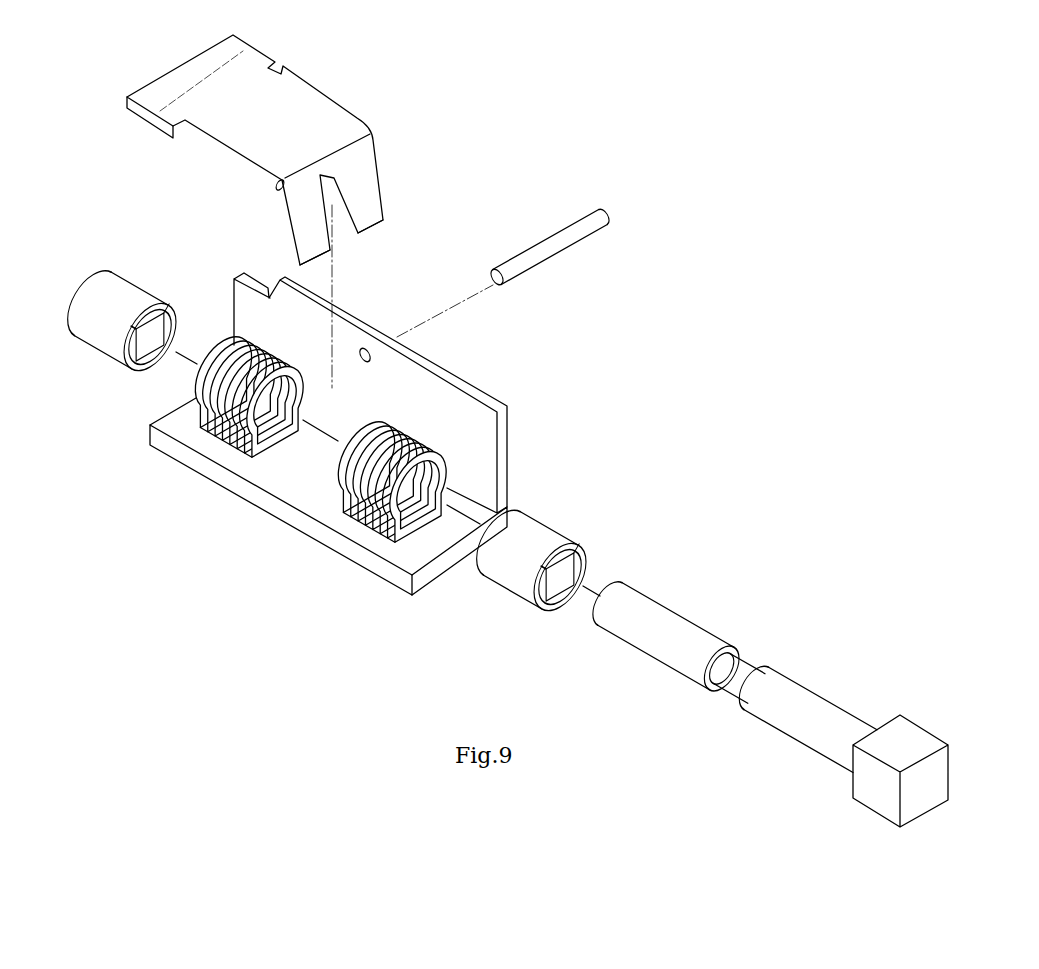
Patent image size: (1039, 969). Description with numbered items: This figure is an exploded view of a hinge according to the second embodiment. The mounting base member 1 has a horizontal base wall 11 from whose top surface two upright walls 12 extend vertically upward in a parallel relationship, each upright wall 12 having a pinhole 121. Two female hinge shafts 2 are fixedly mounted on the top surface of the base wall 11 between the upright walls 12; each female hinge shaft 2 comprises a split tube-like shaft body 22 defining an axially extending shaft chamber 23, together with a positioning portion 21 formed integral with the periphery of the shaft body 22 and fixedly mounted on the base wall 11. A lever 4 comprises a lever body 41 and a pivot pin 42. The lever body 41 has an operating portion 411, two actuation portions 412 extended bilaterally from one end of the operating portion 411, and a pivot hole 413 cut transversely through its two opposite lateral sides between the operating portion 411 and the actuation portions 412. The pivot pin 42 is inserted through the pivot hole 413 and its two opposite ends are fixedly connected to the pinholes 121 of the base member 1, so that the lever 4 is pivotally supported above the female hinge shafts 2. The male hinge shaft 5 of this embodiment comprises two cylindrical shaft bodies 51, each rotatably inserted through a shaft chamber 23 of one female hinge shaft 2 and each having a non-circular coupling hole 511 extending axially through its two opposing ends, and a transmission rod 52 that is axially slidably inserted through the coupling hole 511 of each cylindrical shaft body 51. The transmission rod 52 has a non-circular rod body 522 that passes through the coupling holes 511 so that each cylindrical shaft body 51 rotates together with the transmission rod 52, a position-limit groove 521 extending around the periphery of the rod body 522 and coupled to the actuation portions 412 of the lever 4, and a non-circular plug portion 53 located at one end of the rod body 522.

The mounting base member 1 is at (297, 496).
The horizontal base wall 11 is at (187, 438).
The upright wall 12 is at (381, 433).
The pinhole 121 is at (376, 357).
The female hinge shaft 2 is at (327, 462).
The positioning portion 21 is at (270, 445).
The split tube-like shaft body 22 is at (308, 398).
The shaft chamber 23 is at (440, 486).
The lever 4 is at (352, 95).
The lever body 41 is at (303, 100).
The operating portion 411 is at (197, 87).
The actuation portion 412 is at (300, 242).
The pivot hole 413 is at (273, 185).
The pivot pin 42 is at (565, 245).
The male hinge shaft 5 is at (505, 538).
The cylindrical shaft body 51 is at (347, 436).
The non-circular coupling hole 511 is at (138, 348).
The transmission rod 52 is at (746, 674).
The position-limit groove 521 is at (759, 653).
The non-circular rod body 522 is at (677, 658).
The non-circular plug portion 53 is at (908, 741).